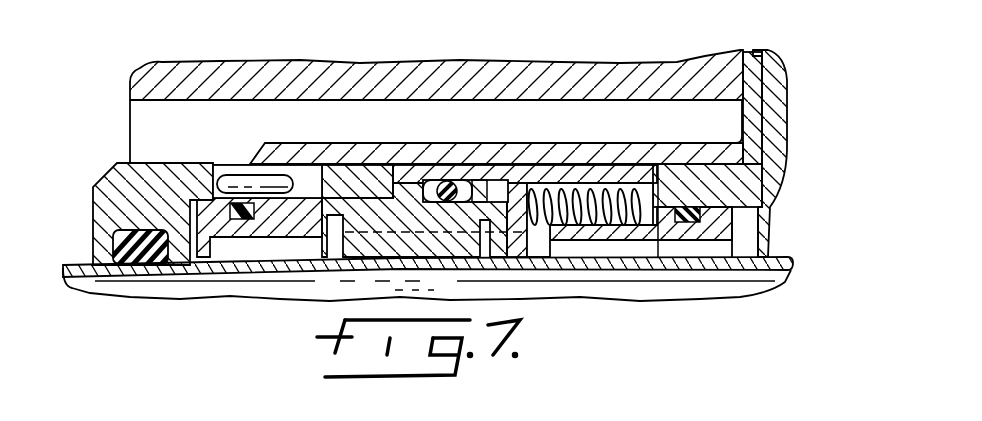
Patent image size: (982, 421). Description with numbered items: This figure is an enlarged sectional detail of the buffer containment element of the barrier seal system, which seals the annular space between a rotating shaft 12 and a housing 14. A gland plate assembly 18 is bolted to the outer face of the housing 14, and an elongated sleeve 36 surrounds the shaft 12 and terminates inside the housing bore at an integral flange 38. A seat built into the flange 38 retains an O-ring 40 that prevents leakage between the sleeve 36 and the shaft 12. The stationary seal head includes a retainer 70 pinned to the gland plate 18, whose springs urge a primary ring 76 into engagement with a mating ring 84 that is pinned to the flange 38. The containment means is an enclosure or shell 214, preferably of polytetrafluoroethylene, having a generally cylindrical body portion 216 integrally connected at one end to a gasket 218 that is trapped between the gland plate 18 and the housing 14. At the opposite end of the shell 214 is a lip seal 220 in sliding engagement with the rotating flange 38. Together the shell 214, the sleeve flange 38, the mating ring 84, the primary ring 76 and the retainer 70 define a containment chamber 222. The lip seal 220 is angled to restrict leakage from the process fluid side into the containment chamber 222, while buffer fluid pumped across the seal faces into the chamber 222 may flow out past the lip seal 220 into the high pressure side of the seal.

The rotating shaft 12 is at (257, 283).
The housing 14 is at (613, 63).
The gland plate assembly 18 is at (780, 122).
The sleeve 36 is at (693, 265).
The flange 38 is at (110, 200).
The O-ring 40 is at (150, 253).
The retainer 70 is at (430, 173).
The primary ring 76 is at (347, 173).
The mating ring 84 is at (283, 220).
The shell 214 is at (600, 119).
The cylindrical body portion 216 is at (610, 157).
The gasket 218 is at (757, 88).
The lip seal 220 is at (247, 163).
The containment chamber 222 is at (397, 118).